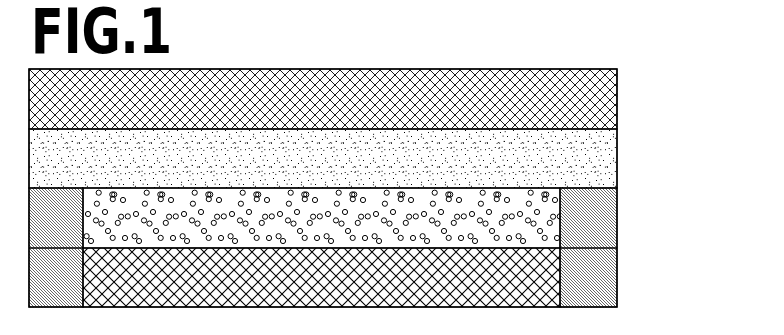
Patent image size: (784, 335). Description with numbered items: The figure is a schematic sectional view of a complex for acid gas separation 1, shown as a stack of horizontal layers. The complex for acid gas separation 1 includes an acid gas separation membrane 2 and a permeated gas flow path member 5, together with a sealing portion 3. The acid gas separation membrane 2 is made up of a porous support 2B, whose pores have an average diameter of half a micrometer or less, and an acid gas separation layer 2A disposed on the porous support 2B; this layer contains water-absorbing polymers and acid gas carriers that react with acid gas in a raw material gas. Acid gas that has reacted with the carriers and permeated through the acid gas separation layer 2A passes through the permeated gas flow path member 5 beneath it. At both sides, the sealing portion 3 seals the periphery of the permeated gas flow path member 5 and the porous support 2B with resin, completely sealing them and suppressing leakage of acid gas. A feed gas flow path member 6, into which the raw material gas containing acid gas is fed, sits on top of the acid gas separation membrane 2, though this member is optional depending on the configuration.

The complex for acid gas separation 1 is at (723, 160).
The acid gas separation membrane 2 is at (691, 135).
The acid gas separation layer 2A is at (606, 145).
The porous support 2B is at (565, 193).
The sealing portion 3 is at (605, 228).
The permeated gas flow path member 5 is at (548, 278).
The feed gas flow path member 6 is at (617, 99).